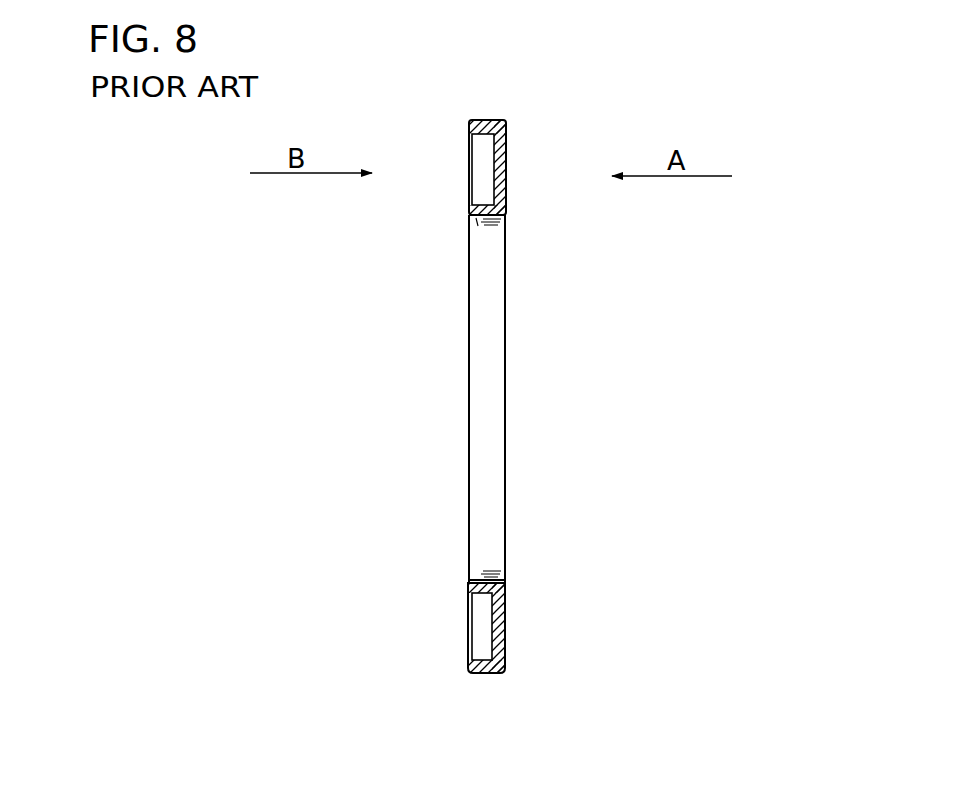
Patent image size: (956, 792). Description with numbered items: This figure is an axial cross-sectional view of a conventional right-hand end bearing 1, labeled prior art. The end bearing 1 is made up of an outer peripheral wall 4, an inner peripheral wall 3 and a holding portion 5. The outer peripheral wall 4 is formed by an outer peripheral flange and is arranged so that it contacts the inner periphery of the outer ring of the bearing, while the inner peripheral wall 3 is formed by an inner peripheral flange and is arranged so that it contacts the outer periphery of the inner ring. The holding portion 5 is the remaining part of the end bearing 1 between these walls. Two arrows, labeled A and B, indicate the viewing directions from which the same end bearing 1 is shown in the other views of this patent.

The right-hand end bearing 1 is at (492, 373).
The inner peripheral wall 3 is at (474, 220).
The outer peripheral wall 4 is at (482, 121).
The holding portion 5 is at (478, 158).